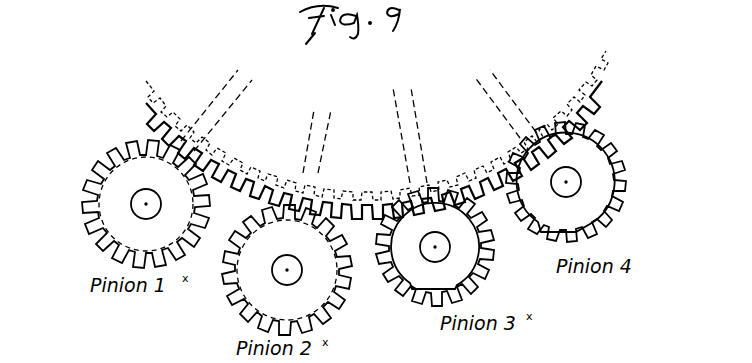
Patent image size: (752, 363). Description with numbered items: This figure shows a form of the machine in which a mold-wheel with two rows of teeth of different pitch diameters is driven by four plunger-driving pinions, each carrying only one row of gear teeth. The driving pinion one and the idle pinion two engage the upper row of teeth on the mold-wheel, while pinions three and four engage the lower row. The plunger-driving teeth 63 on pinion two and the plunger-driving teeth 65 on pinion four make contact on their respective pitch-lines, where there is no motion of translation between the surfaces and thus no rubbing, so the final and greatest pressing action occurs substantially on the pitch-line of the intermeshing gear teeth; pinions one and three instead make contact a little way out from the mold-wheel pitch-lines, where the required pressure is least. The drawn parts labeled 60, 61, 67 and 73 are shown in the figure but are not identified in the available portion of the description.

The pinion 60 is at (348, 242).
The pitch circle of pinion 61 is at (100, 195).
The plunger-driving teeth 63 is at (227, 290).
The plunger-driving teeth 65 is at (618, 175).
The pins / radial arms 67 is at (404, 131).
The toothed ring rack 73 is at (150, 121).